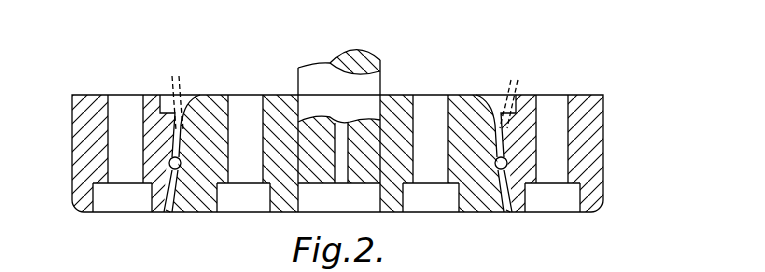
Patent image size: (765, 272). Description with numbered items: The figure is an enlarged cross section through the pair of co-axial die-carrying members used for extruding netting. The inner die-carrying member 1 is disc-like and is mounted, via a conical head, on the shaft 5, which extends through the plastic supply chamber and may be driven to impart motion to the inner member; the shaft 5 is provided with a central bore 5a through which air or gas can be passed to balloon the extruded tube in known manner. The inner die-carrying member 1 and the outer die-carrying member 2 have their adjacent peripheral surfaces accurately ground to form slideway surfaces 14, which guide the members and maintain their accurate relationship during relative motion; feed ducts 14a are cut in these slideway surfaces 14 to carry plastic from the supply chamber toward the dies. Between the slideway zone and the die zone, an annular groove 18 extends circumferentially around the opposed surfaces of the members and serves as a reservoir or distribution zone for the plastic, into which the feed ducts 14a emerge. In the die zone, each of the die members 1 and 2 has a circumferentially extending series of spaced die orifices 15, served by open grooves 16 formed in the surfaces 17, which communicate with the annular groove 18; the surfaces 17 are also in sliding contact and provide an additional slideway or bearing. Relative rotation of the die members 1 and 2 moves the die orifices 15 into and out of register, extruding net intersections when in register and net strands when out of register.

The inner die-carrying member 1 is at (455, 103).
The outer die-carrying member 2 is at (80, 183).
The shaft 5 is at (377, 87).
The central bore 5a is at (343, 128).
The slideway surfaces 14 is at (176, 140).
The feed ducts 14a is at (345, 91).
The die orifices 15 is at (162, 213).
The open grooves 16 is at (158, 182).
The surfaces of zone B 17 is at (170, 216).
The annular groove 18 is at (168, 162).